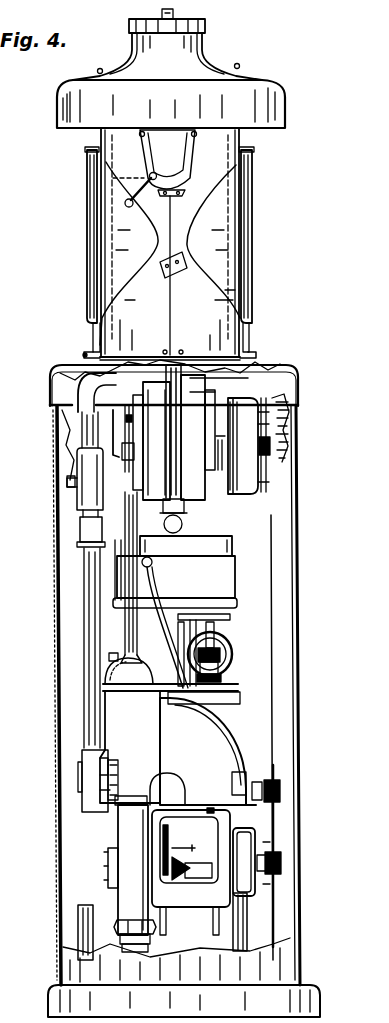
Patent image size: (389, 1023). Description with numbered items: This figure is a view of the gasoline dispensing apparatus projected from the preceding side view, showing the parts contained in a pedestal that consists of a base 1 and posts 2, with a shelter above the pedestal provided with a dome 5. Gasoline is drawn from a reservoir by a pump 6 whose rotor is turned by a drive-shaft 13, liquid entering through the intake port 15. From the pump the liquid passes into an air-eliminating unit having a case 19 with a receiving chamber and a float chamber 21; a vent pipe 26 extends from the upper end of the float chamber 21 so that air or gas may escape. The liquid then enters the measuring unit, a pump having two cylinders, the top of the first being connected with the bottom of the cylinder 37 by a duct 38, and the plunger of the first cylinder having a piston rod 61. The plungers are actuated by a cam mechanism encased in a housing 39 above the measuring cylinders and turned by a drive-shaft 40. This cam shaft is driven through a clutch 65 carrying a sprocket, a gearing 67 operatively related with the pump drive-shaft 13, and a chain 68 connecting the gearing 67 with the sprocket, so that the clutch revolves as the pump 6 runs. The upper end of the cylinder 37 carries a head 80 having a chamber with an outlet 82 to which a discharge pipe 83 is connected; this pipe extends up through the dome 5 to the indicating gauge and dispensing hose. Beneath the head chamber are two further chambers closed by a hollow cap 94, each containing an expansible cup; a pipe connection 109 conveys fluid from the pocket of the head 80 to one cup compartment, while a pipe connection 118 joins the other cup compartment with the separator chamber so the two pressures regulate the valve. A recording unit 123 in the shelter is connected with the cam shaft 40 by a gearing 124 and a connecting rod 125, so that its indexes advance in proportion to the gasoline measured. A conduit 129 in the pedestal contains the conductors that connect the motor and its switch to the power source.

The base 1 is at (58, 990).
The posts 2 is at (82, 906).
The dome 5 is at (171, 68).
The pump 6 is at (126, 865).
The drive-shaft 13 is at (202, 862).
The intake port 15 is at (135, 950).
The case 19 is at (215, 822).
The float chamber 21 is at (169, 730).
The vent pipe 26 is at (126, 660).
The cylinder 37 is at (152, 636).
The duct 38 is at (188, 706).
The housing 39 is at (232, 384).
The drive-shaft 40 is at (220, 472).
The piston rod 61 is at (222, 628).
The clutch 65 is at (255, 495).
The gearing 67 is at (252, 894).
The chain 68 is at (274, 710).
The head 80 is at (232, 548).
The outlet 82 is at (177, 533).
The discharge pipe 83 is at (162, 412).
The hollow cap 94 is at (231, 609).
The pipe connection 109 is at (152, 568).
The pipe connection 118 is at (232, 658).
The recording unit 123 is at (251, 163).
The gearing 124 is at (121, 467).
The connecting rod 125 is at (126, 382).
The conduit 129 is at (82, 573).